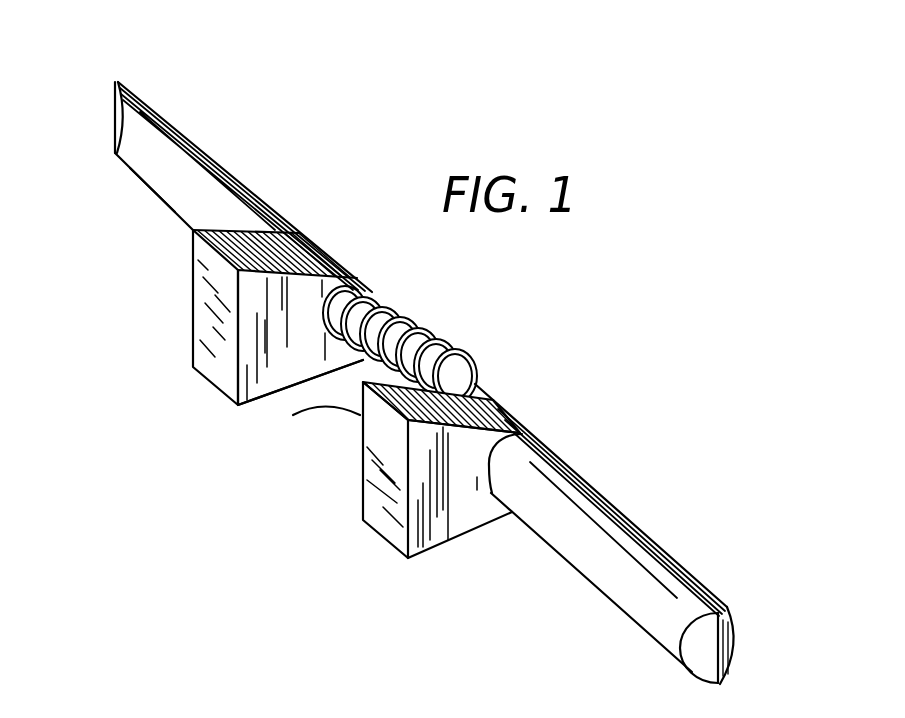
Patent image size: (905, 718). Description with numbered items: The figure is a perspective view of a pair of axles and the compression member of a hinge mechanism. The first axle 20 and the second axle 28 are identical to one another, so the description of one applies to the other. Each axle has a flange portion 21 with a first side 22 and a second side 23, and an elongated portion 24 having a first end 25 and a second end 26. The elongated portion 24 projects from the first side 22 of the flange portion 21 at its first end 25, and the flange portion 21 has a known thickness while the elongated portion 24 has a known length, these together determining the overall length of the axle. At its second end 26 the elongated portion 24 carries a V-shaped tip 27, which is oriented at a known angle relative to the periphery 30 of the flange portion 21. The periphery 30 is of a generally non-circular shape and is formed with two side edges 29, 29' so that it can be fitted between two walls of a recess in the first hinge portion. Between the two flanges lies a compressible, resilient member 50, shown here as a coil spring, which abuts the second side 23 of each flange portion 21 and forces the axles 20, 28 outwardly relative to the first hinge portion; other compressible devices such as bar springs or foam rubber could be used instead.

The first axle 20 is at (452, 348).
The flange portion 21 is at (358, 401).
The first side 22 is at (465, 515).
The second side 23 is at (303, 352).
The elongated portion 24 is at (217, 163).
The first end 25 is at (535, 457).
The second end 26 is at (125, 82).
The V-shaped tip 27 is at (117, 82).
The second axle 28 is at (150, 190).
The side edge 29 is at (448, 370).
The side edge 29' is at (394, 401).
The periphery 30 is at (370, 490).
The compressible, resilient member 50 is at (402, 325).